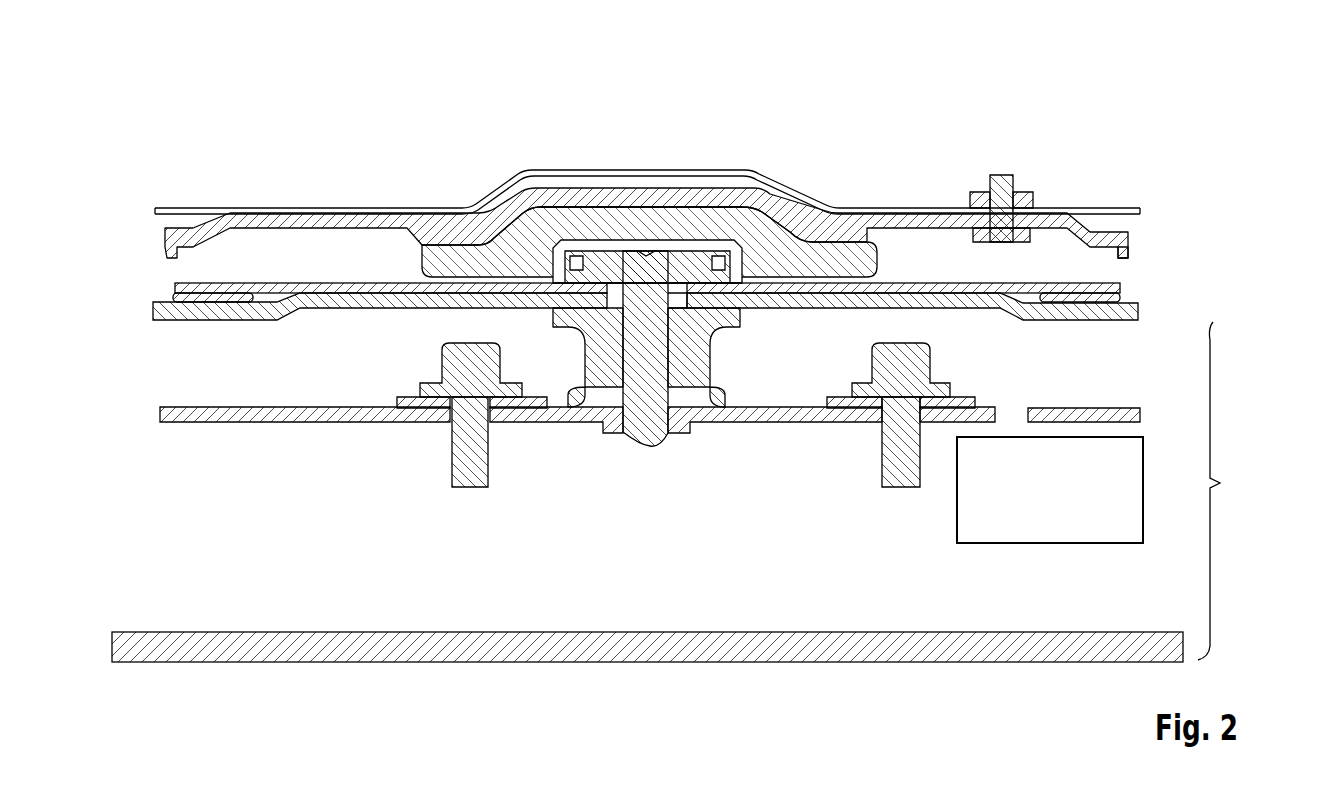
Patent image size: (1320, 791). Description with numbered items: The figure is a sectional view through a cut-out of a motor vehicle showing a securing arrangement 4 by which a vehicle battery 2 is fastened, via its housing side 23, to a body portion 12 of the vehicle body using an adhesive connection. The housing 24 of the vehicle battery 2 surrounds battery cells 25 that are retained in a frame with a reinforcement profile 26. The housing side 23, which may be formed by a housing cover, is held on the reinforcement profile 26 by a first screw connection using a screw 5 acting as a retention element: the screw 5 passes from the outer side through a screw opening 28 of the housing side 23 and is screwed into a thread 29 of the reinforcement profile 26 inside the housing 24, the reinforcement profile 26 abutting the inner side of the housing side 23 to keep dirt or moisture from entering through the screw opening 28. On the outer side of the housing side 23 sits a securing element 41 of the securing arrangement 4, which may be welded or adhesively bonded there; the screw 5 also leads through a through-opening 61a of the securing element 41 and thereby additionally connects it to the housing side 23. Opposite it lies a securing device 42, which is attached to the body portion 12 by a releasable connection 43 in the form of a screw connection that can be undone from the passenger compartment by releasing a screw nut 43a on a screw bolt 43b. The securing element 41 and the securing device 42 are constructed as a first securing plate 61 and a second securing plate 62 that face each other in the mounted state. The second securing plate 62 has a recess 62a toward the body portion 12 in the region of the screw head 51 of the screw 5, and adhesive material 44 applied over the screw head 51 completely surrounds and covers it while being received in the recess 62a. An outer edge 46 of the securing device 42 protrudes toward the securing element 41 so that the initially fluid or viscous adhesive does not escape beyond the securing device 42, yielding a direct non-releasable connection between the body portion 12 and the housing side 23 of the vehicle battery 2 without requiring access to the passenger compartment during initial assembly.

The vehicle battery 2 is at (1176, 357).
The securing arrangement 4 is at (697, 147).
The screw 5 is at (637, 432).
The body portion 12 is at (647, 190).
The housing side 23 is at (1140, 312).
The housing 24 is at (685, 492).
The battery cells 25 is at (1130, 470).
The reinforcement profile 26 is at (659, 357).
The screw opening 28 is at (612, 305).
The thread 29 is at (677, 343).
The securing element 41 is at (695, 221).
The securing device 42 is at (730, 204).
The releasable connection 43 is at (1013, 201).
The screw nut 43a is at (1035, 200).
The screw bolt 43b is at (985, 186).
The adhesive material 44 is at (773, 250).
The outer edge 46 is at (1122, 257).
The screw head 51 is at (649, 162).
The first securing plate 61 is at (1112, 290).
The through-opening 61a is at (684, 295).
The second securing plate 62 is at (730, 204).
The recess 62a is at (738, 207).